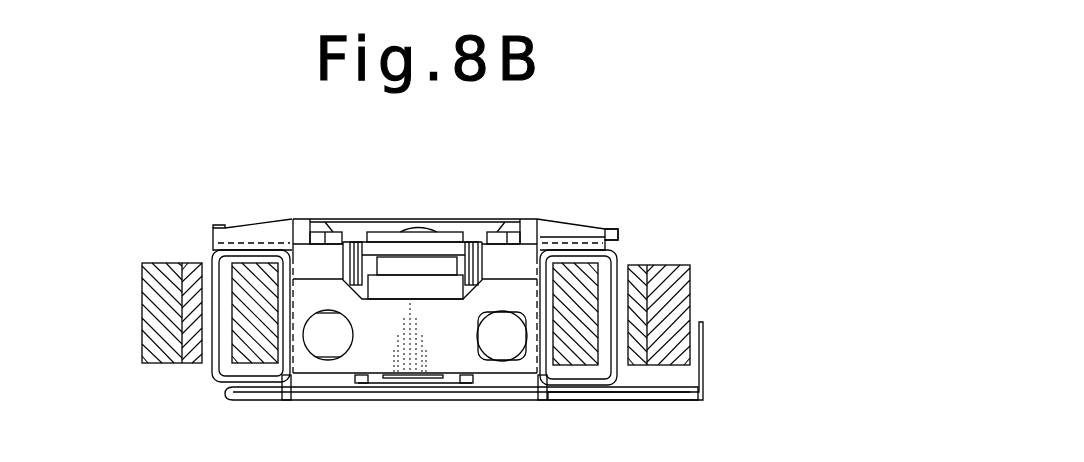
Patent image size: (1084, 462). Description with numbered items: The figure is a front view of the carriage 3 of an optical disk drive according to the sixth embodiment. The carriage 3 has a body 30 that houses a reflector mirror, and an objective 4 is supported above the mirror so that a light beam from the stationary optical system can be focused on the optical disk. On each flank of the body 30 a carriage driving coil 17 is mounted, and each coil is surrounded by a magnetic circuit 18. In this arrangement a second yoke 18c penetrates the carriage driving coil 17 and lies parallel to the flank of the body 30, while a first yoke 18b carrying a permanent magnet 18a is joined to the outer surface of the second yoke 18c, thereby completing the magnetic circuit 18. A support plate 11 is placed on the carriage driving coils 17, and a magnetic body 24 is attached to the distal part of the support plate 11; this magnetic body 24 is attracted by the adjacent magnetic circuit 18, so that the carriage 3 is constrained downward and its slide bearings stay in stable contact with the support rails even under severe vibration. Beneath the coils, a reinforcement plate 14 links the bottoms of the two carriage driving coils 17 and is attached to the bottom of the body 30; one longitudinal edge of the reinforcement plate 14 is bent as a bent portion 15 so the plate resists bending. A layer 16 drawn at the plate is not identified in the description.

The carriage 3 is at (229, 200).
The objective 4 is at (417, 228).
The support plate 11 is at (572, 240).
The magnetic body 24 is at (616, 222).
The magnetic circuit 18 is at (702, 327).
The permanent magnet 18a is at (636, 275).
The first yoke 18b is at (667, 300).
The second yoke 18c is at (579, 336).
The carriage driving coil 17 is at (228, 385).
The bent portion 15 is at (703, 340).
The reinforcement plate 14 is at (505, 402).
The insulating layer 16 is at (458, 394).
The body 30 is at (347, 362).